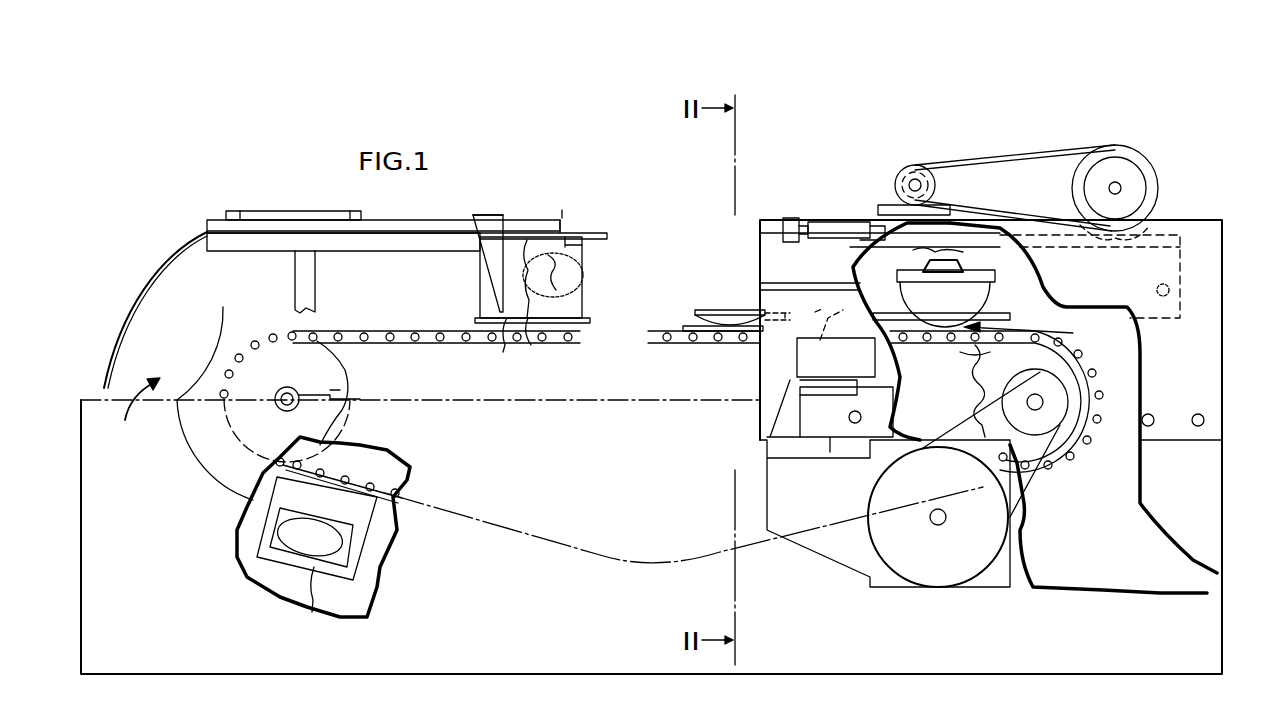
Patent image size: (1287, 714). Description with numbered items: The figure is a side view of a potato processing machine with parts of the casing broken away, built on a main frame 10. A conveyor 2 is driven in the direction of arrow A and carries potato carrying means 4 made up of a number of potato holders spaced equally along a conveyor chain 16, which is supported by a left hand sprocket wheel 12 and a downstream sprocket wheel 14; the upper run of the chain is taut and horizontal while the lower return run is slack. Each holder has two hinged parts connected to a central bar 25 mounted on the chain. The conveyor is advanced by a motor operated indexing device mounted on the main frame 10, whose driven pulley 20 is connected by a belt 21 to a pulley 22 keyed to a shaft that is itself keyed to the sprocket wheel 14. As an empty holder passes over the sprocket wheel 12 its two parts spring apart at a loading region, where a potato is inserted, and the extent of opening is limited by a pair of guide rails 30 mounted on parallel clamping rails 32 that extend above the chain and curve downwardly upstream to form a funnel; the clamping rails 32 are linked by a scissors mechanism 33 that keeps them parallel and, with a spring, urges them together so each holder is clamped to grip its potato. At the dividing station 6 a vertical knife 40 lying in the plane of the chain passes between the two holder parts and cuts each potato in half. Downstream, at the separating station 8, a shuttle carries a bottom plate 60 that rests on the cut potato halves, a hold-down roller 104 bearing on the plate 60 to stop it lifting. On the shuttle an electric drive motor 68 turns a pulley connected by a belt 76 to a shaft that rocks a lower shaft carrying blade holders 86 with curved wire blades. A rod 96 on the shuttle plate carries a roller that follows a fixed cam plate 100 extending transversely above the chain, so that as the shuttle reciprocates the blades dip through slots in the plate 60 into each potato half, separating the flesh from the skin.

The conveyor 2 is at (430, 312).
The potato carrying means 4 is at (604, 243).
The dividing station 6 is at (495, 200).
The separating station 8 is at (876, 190).
The main frame 10 is at (651, 447).
The sprocket wheel 12 is at (290, 397).
The sprocket wheel 14 is at (966, 391).
The conveyor chain 16 is at (665, 331).
The driven pulley 20 is at (938, 517).
The belt 21 is at (1040, 480).
The pulley 22 is at (1057, 394).
The central bar 25 is at (582, 318).
The guide rail 30 is at (134, 313).
The clamping rail 32 is at (358, 251).
The scissors mechanism 33 is at (286, 210).
The knife 40 is at (493, 291).
The bottom plate 60 is at (886, 312).
The drive motor 68 is at (1115, 145).
The belt 76 is at (1018, 155).
The blade holder 86 is at (990, 288).
The rod 96 is at (836, 222).
The cam plate 100 is at (797, 216).
The hold-down roller 104 is at (836, 351).